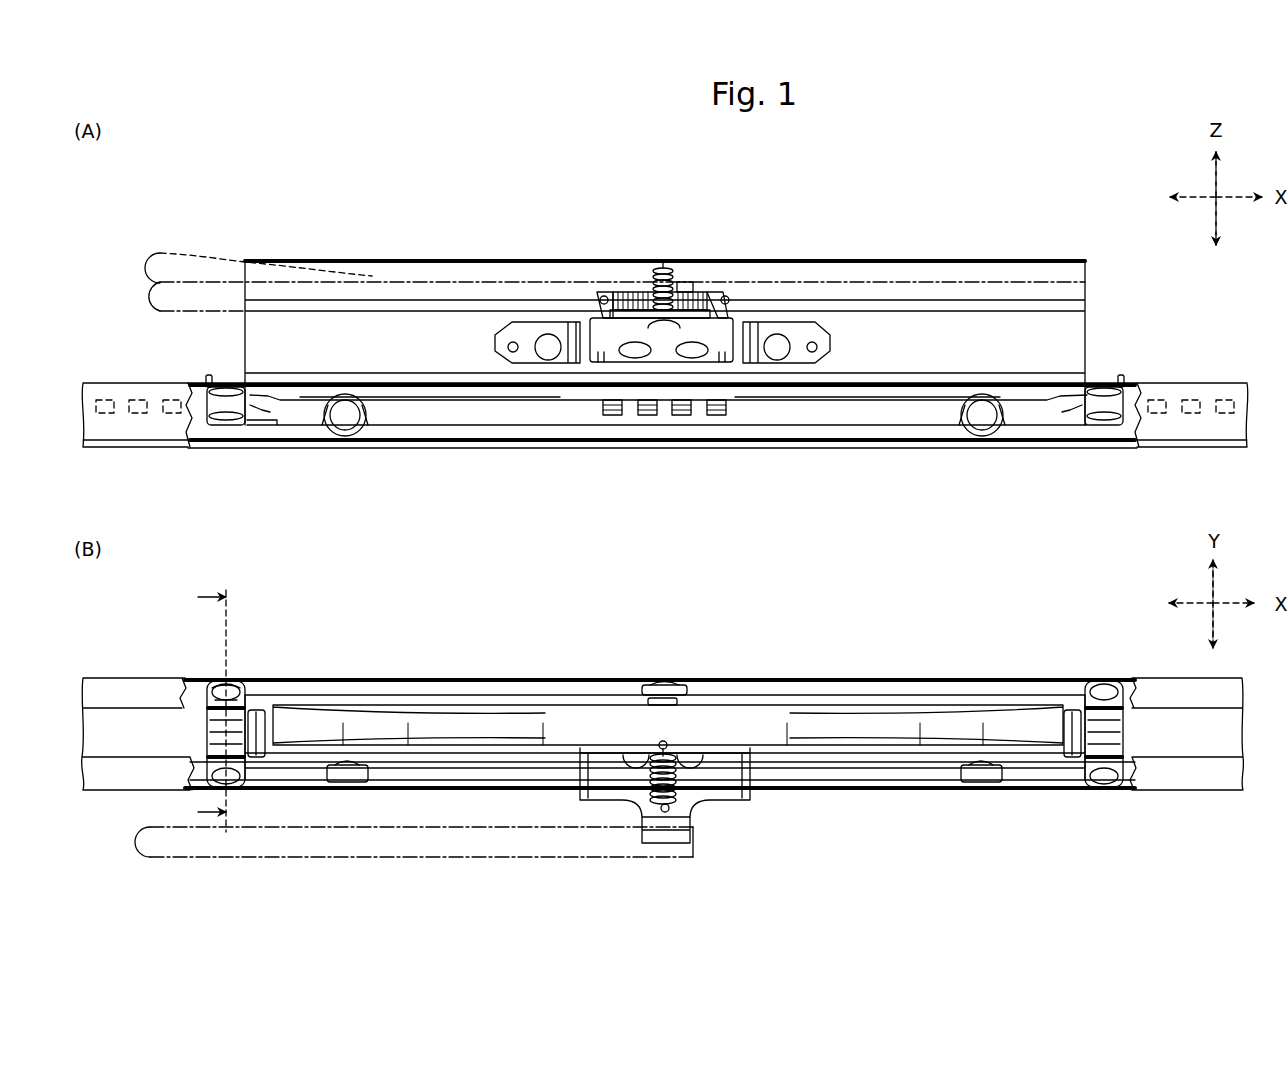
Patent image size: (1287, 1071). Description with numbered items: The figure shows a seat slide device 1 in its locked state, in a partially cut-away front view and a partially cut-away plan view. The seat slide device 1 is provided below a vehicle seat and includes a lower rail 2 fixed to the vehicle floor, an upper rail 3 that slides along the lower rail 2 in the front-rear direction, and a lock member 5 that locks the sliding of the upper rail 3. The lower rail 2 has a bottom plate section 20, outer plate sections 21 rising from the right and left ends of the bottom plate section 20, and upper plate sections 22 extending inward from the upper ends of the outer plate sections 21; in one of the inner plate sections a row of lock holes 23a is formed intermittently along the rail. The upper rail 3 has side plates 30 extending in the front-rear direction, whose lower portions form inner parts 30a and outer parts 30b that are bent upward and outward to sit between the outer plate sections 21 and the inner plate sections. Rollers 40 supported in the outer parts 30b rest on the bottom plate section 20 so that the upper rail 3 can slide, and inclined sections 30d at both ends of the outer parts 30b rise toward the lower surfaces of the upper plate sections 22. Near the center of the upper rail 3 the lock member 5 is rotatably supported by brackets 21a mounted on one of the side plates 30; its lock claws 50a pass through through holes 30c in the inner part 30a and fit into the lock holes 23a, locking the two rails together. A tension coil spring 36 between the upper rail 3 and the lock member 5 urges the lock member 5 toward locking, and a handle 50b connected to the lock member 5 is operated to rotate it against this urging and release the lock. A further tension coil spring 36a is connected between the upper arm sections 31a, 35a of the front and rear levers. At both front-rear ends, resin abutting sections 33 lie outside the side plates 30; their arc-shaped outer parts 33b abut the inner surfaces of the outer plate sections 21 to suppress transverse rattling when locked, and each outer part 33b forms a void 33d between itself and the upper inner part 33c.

The seat slide device 1 is at (1040, 212).
The lower rail 2 is at (1014, 466).
The upper rail 3 is at (945, 250).
The lock member 5 is at (615, 345).
The bottom plate section 20 is at (860, 448).
The outer plate section 21 is at (125, 445).
The bracket 21a is at (790, 322).
The upper plate section 22 is at (125, 690).
The lock hole 23a is at (140, 400).
The side plate 30 is at (1075, 332).
The inner part 30a is at (570, 410).
The outer part 30b is at (510, 700).
The through hole 30c is at (730, 402).
The inclined section 30d is at (268, 418).
The upper arm section 31a is at (597, 300).
The abutting section 33 is at (204, 424).
The outer part 33b is at (210, 690).
The inner part 33c is at (228, 700).
The void 33d is at (250, 710).
The upper arm section 35a is at (727, 300).
The tension coil spring 36 is at (648, 280).
The tension coil spring 36a is at (635, 300).
The roller 40 is at (345, 432).
The lock claw 50a is at (716, 416).
The handle 50b is at (130, 290).